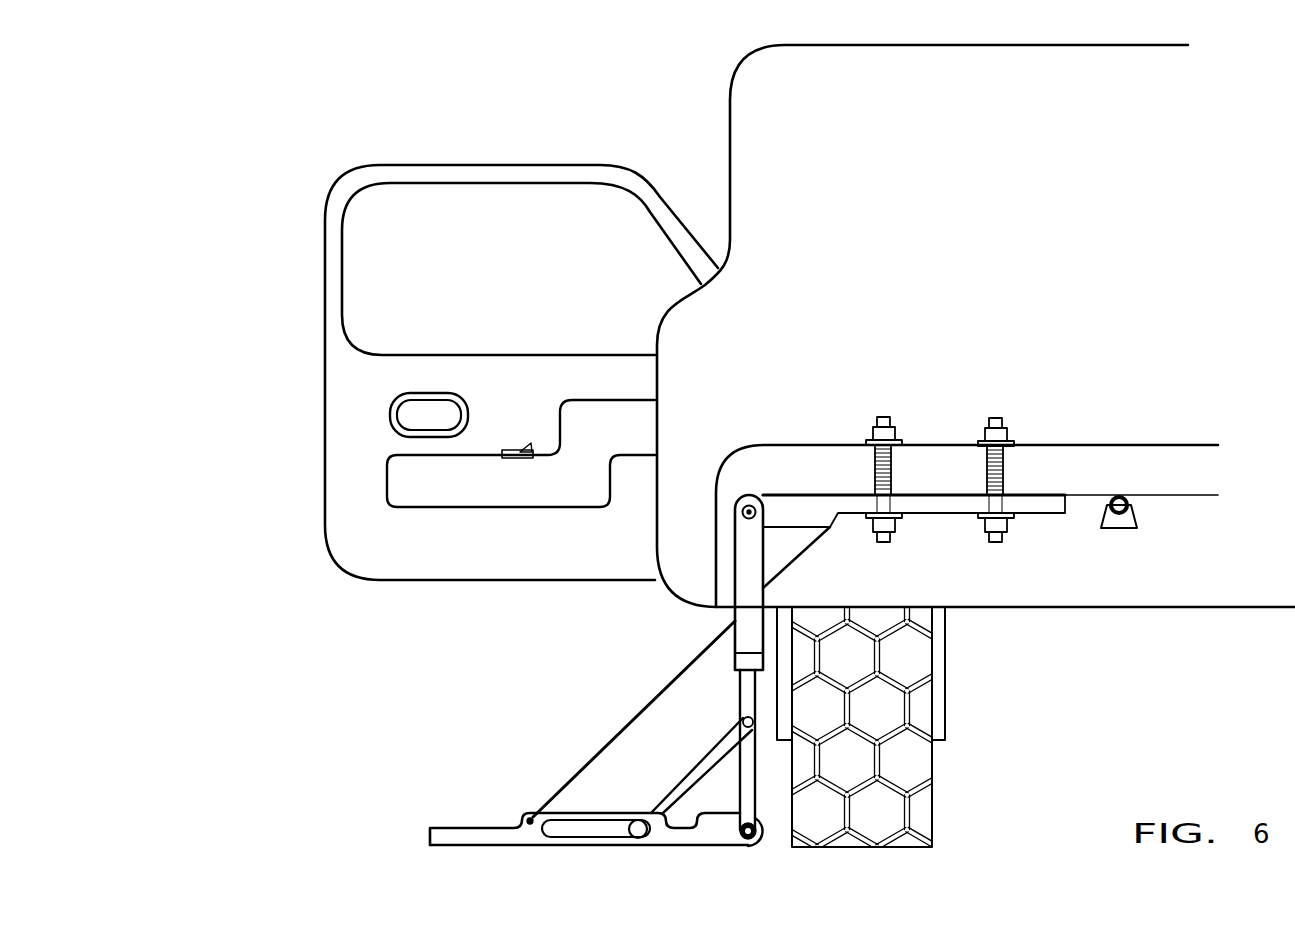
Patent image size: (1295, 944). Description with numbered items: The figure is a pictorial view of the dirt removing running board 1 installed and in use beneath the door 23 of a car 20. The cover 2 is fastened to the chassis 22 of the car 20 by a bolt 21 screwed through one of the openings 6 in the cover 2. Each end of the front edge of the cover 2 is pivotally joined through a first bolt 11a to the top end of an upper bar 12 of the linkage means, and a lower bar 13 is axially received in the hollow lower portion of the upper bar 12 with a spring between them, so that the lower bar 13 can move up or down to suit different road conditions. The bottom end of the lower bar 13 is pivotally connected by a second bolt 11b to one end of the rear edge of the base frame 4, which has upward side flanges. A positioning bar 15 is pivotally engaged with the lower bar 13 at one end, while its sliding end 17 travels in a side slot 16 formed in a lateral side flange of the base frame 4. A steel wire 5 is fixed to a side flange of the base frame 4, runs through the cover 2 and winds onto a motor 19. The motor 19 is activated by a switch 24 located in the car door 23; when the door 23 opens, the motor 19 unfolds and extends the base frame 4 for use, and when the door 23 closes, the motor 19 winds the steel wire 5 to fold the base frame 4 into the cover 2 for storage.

The dirt removing running board 1 is at (534, 790).
The cover 2 is at (957, 508).
The base frame 4 is at (475, 846).
The steel wire 5 is at (608, 738).
The opening 6 is at (890, 503).
The first bolt 11a is at (738, 506).
The second bolt 11b is at (753, 842).
The upper bar 12 is at (740, 643).
The lower bar 13 is at (742, 786).
The positioning bar 15 is at (684, 782).
The side slot 16 is at (590, 832).
The sliding end 17 is at (642, 836).
The motor 19 is at (1135, 509).
The car 20 is at (742, 133).
The bolt 21 is at (885, 417).
The chassis 22 is at (818, 445).
The car door 23 is at (338, 376).
The switch 24 is at (515, 448).